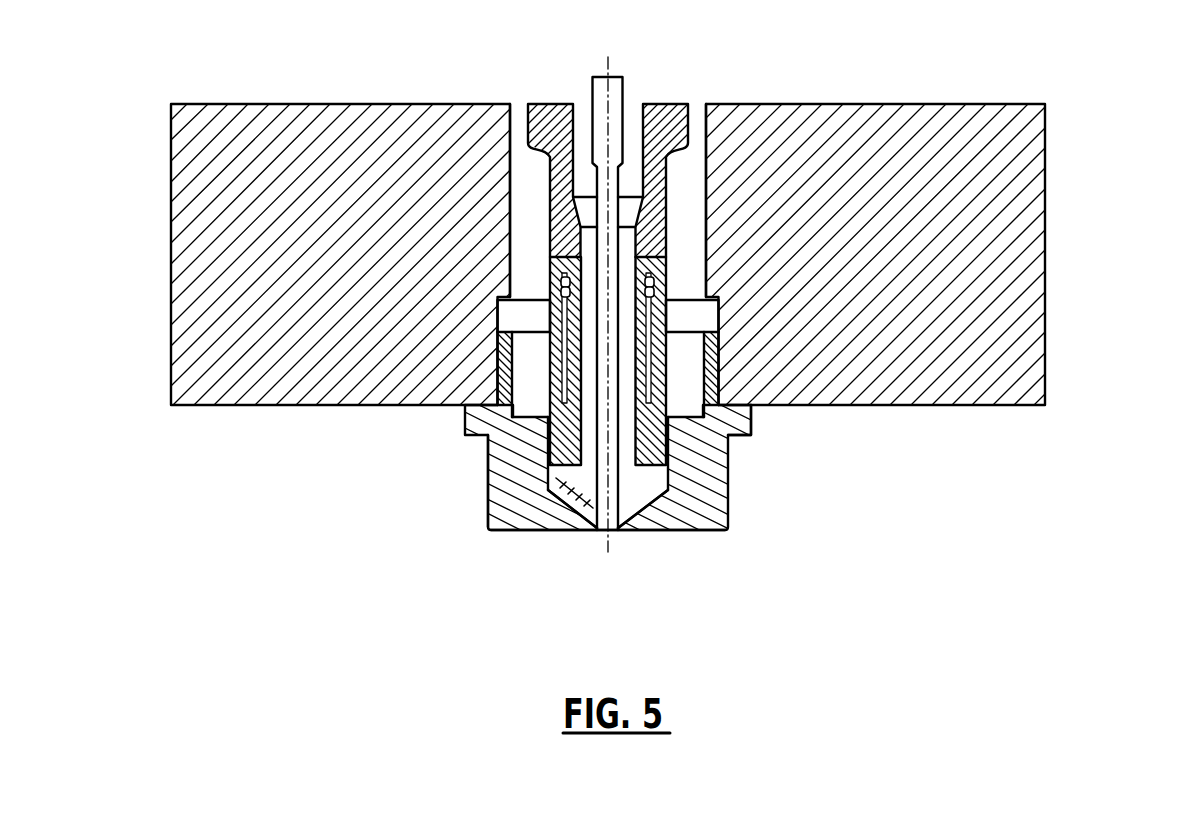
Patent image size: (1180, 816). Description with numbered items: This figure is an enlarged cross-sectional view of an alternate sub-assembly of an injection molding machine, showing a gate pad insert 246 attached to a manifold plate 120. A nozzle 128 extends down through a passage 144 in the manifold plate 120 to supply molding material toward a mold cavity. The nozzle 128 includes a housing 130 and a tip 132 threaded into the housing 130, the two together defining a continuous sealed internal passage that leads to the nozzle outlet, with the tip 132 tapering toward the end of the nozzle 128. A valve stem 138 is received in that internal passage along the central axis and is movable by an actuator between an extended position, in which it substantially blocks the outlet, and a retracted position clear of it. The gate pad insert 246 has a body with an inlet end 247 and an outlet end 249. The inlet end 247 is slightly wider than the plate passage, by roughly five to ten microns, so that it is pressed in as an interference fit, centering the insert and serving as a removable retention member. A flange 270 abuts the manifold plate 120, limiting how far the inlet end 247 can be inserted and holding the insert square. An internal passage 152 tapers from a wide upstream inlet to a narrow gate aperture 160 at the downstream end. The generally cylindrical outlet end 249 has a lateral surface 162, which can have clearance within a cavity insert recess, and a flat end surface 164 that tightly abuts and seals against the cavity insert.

The manifold plate 120 is at (1045, 145).
The nozzle 128 is at (514, 92).
The housing 130 is at (654, 106).
The valve stem 138 is at (585, 107).
The passage 144 is at (697, 107).
The tip 132 is at (640, 327).
The inlet end 247 is at (495, 362).
The internal passage 152 is at (528, 410).
The lateral surface 162 is at (670, 461).
The gate pad insert 246 is at (707, 497).
The flange 270 is at (750, 415).
The flat end surface 164 is at (682, 532).
The outlet end 249 is at (513, 513).
The gate aperture 160 is at (612, 533).